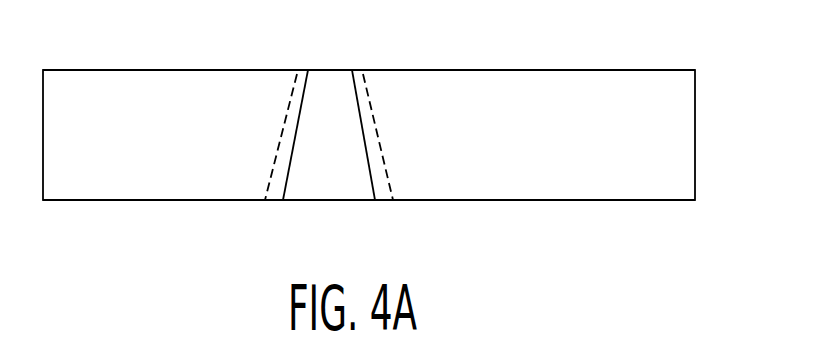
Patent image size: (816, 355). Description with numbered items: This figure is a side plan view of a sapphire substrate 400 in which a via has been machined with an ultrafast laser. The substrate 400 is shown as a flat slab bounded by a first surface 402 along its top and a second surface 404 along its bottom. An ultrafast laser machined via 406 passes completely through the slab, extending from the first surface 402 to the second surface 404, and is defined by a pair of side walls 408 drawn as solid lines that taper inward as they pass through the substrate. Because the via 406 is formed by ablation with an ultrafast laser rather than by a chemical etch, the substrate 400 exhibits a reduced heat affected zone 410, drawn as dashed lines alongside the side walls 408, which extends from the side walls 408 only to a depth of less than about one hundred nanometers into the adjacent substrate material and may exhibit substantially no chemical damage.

The substrate 400 is at (440, 245).
The first surface 402 is at (633, 202).
The second surface 404 is at (626, 70).
The ultrafast laser machined via 406 is at (333, 212).
The side walls 408 is at (298, 86).
The reduced heat affected zone 410 is at (287, 108).